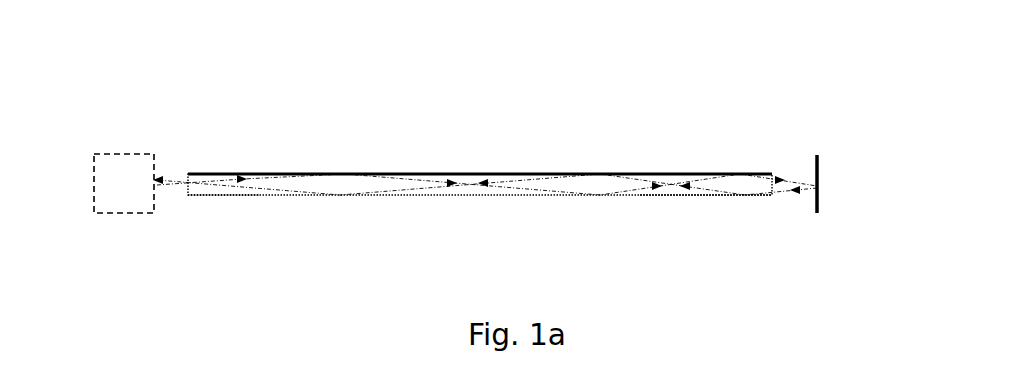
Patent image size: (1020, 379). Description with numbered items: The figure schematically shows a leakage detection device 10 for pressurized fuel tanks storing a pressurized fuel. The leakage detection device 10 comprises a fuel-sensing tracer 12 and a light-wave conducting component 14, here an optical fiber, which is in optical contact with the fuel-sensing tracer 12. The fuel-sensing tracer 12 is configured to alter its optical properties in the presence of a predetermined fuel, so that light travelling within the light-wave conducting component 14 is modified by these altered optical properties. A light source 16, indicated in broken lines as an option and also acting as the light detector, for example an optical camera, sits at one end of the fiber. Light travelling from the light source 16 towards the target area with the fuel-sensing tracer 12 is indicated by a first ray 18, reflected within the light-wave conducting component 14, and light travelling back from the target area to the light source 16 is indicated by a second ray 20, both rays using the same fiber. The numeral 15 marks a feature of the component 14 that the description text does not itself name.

The leakage detection device 10 is at (651, 117).
The fuel-sensing tracer 12 is at (814, 166).
The light-wave conducting component 14 is at (211, 174).
The top surface of waveguide 15 is at (427, 173).
The light source 16 is at (126, 154).
The first ray 18 is at (254, 179).
The second ray 20 is at (699, 190).